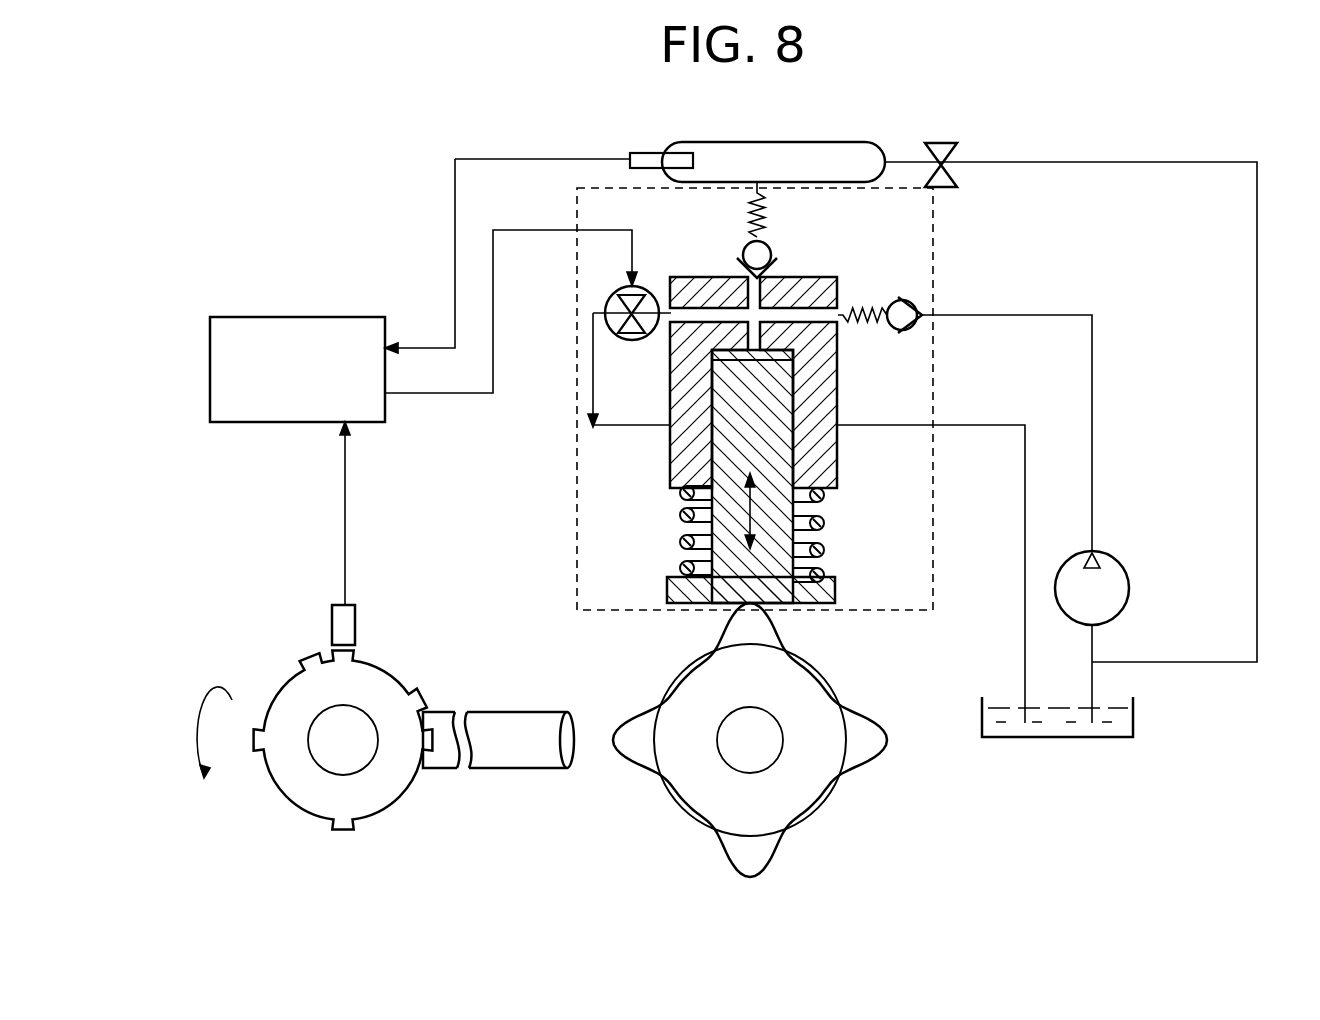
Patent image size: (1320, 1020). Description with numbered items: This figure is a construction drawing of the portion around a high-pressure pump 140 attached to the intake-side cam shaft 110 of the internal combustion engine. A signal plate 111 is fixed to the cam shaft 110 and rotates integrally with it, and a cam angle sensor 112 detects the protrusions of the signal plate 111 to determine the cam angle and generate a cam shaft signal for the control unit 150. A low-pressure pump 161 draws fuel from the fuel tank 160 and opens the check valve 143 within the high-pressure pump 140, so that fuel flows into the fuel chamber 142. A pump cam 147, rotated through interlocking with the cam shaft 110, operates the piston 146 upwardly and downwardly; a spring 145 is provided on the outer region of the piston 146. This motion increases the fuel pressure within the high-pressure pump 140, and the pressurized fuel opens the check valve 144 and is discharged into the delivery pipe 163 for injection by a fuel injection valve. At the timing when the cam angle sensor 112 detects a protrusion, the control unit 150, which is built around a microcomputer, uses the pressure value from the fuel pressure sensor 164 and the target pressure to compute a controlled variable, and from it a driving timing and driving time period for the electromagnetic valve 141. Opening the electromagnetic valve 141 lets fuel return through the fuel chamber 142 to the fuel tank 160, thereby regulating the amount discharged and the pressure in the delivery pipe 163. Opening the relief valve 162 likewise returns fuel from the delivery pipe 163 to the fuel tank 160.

The cam shaft 110 is at (535, 765).
The signal plate 111 is at (295, 805).
The cam angle sensor 112 is at (355, 625).
The high-pressure pump 140 is at (933, 230).
The electromagnetic valve 141 is at (632, 340).
The fuel chamber 142 is at (790, 355).
The check valve 143 is at (902, 300).
The check valve 144 is at (772, 250).
The spring 145 is at (824, 522).
The piston 146 is at (780, 465).
The pump cam 147 is at (765, 857).
The control unit 150 is at (237, 317).
The fuel tank 160 is at (1135, 718).
The low-pressure pump 161 is at (1120, 562).
The relief valve 162 is at (944, 143).
The delivery pipe 163 is at (880, 142).
The fuel pressure sensor 164 is at (641, 153).